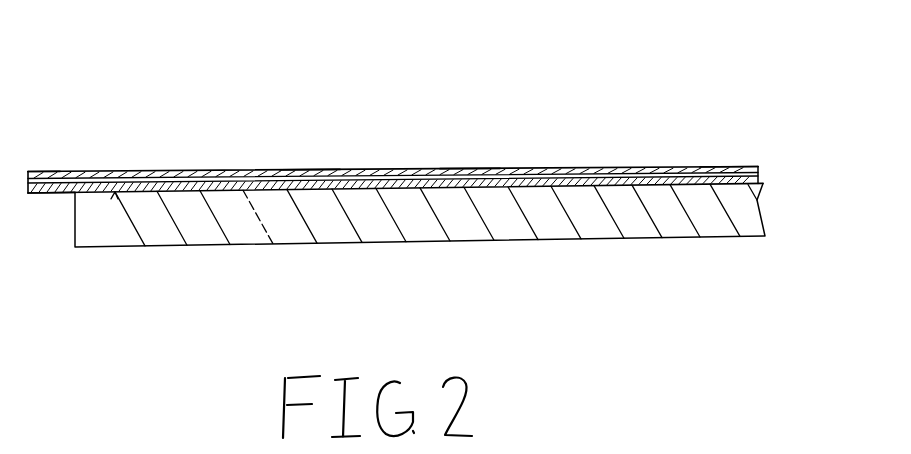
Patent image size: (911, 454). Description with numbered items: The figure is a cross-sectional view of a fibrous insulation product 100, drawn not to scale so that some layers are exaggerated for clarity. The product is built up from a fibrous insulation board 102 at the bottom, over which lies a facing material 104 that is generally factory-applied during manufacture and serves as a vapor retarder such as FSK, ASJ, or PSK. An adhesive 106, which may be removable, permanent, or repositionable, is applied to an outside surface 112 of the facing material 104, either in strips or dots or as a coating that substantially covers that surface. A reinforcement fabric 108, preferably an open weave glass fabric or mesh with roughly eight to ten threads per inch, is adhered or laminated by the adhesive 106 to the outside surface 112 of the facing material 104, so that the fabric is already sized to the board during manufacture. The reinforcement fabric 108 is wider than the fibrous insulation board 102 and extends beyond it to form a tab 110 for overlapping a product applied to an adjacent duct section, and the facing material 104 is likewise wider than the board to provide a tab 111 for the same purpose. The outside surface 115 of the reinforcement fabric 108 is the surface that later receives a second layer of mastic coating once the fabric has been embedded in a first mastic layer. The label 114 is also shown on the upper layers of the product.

The fibrous insulation product 100 is at (94, 98).
The fibrous insulation board 102 is at (123, 222).
The facing material 104 is at (760, 178).
The adhesive 106 is at (758, 170).
The reinforcement fabric 108 is at (153, 176).
The tab 110 is at (35, 172).
The tab 111 is at (45, 195).
The outside surface 112 is at (402, 172).
The top surface 114 is at (456, 167).
The outside surface 115 is at (297, 168).